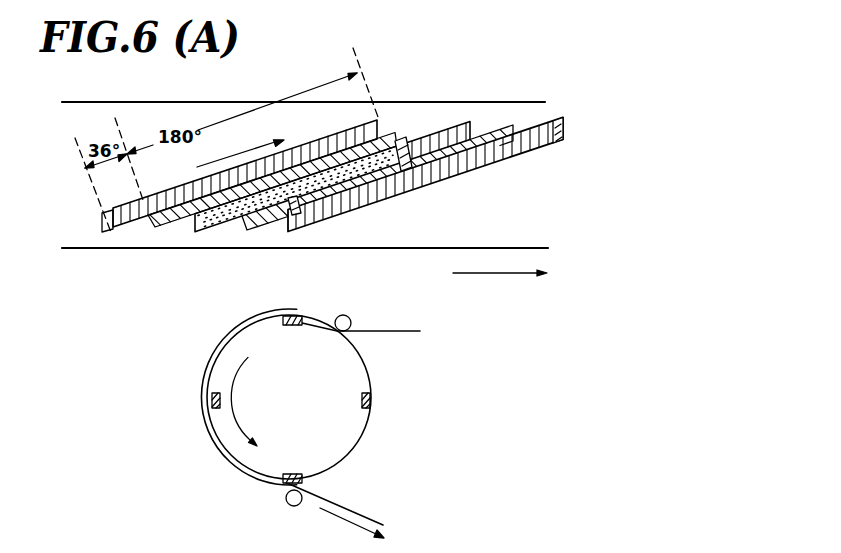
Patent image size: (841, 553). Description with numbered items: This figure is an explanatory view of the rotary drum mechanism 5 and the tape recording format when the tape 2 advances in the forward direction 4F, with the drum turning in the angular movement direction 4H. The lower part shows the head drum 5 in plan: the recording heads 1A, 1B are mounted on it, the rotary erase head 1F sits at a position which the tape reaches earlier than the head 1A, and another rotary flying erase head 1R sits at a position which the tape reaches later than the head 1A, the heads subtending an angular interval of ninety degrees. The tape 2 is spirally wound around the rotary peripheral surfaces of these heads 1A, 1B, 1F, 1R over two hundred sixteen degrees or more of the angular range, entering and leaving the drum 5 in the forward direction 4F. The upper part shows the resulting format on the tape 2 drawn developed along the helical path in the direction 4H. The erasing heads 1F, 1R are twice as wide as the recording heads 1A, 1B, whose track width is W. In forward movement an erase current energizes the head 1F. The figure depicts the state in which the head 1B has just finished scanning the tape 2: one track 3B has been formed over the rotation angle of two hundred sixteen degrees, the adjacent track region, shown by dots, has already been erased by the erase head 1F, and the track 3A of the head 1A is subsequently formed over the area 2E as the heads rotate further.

The recording head 1A is at (292, 218).
The recording head 1B is at (562, 120).
The rotary erase head 1F is at (404, 144).
The rotary flying erase head 1R is at (373, 402).
The tape 2 is at (483, 102).
The area 2E is at (376, 147).
The track 3A is at (160, 228).
The track 3B is at (110, 226).
The forward direction 4F is at (500, 276).
The angular movement direction 4H is at (218, 160).
The rotary drum mechanism 5 is at (363, 366).